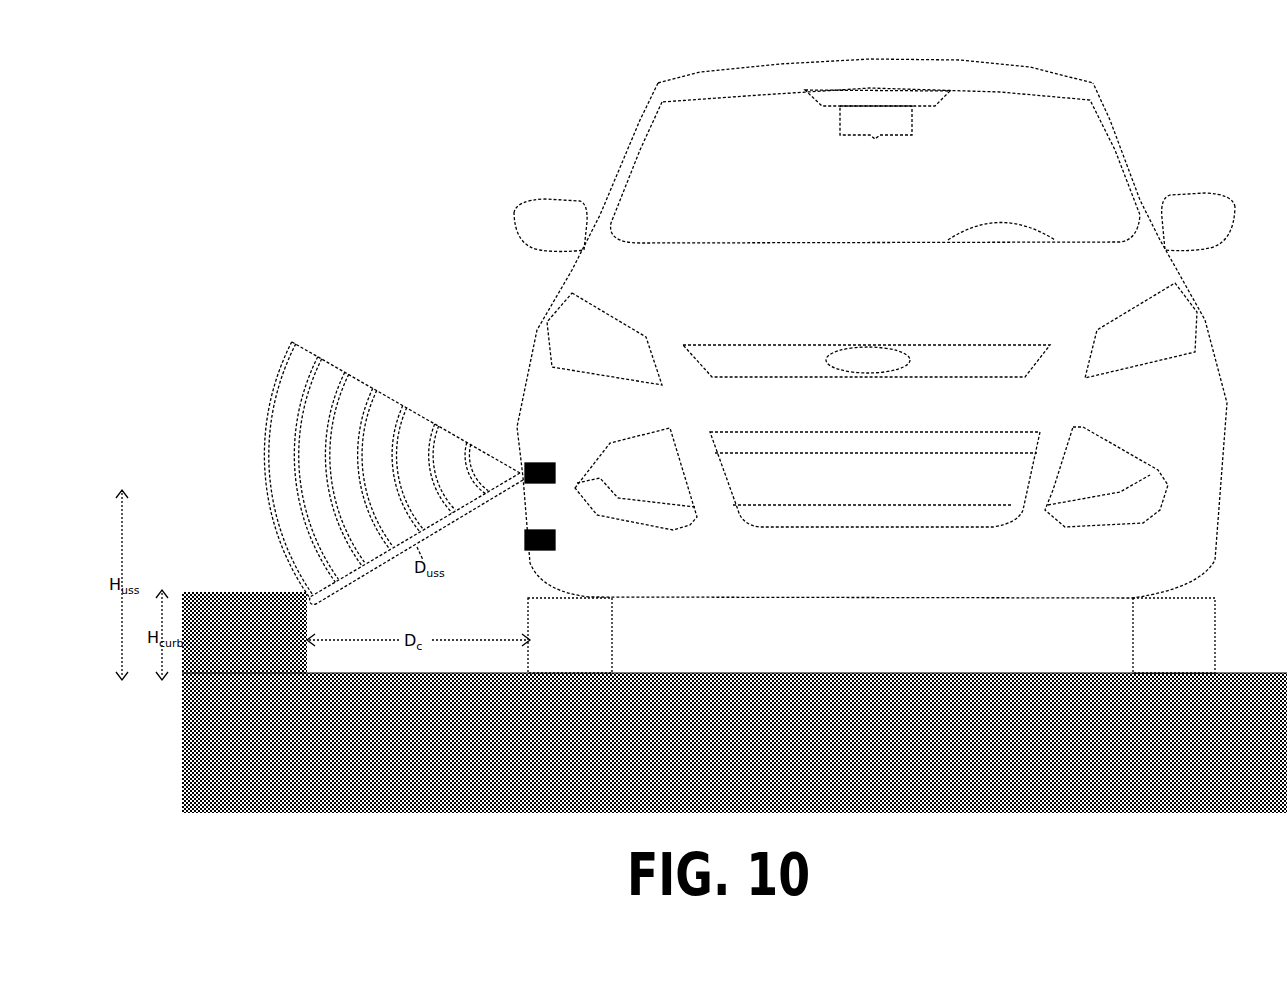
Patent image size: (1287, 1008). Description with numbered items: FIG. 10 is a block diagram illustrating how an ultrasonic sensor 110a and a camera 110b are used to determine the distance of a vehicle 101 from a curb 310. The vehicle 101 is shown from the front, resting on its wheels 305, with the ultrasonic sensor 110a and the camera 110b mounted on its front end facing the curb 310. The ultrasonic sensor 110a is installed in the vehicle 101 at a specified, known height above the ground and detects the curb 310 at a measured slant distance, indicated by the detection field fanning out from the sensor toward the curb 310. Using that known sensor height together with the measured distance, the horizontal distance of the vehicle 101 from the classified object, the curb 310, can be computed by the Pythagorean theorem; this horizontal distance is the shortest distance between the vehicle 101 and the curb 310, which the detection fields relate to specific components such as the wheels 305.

The vehicle 101 is at (874, 328).
The ultrasonic sensor 110a is at (540, 463).
The camera 110b is at (555, 540).
The wheels 305 is at (871, 635).
The curb 310 is at (244, 632).